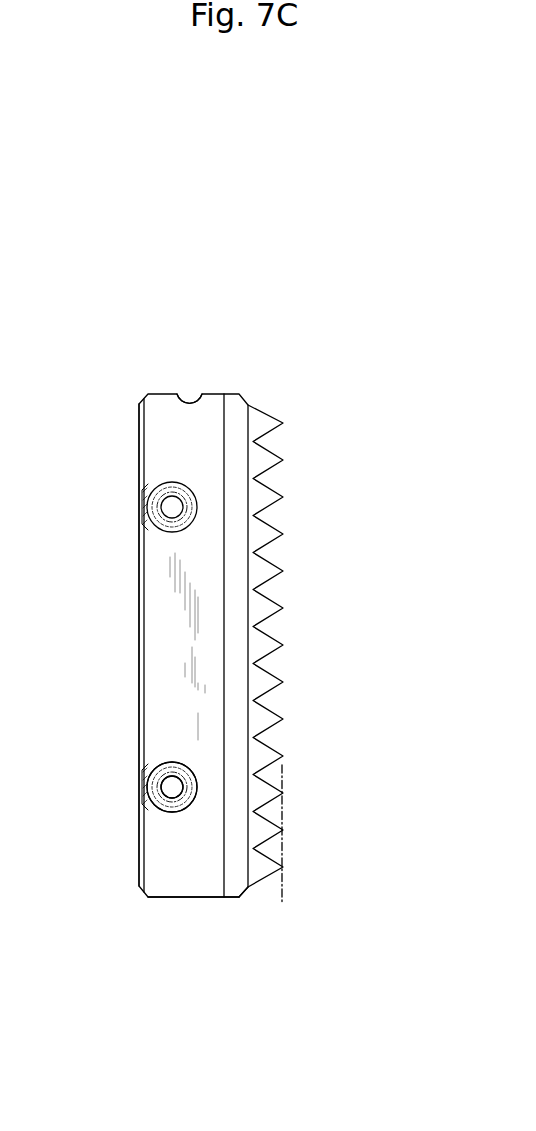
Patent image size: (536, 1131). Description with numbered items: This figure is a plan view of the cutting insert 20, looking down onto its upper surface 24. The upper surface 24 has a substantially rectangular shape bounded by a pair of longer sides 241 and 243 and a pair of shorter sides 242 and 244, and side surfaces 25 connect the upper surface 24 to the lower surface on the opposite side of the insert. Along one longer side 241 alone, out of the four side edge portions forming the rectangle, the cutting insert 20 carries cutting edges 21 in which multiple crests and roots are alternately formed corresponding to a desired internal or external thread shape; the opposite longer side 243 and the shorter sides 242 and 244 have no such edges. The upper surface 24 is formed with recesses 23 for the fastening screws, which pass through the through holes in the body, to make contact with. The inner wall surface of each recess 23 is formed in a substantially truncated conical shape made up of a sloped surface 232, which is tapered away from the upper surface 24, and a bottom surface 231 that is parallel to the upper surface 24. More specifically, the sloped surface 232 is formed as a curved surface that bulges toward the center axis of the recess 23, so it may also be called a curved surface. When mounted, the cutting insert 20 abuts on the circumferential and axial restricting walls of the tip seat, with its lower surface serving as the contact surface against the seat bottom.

The cutting insert 20 is at (245, 640).
The cutting edges 21 is at (276, 563).
The recesses 23 is at (172, 503).
The upper surface 24 is at (168, 440).
The side surfaces 25 is at (207, 898).
The bottom surface 231 is at (170, 787).
The sloped surface 232 is at (178, 808).
The longer side 241 is at (282, 855).
The shorter side 242 is at (162, 393).
The longer side 243 is at (140, 670).
The shorter side 244 is at (165, 898).